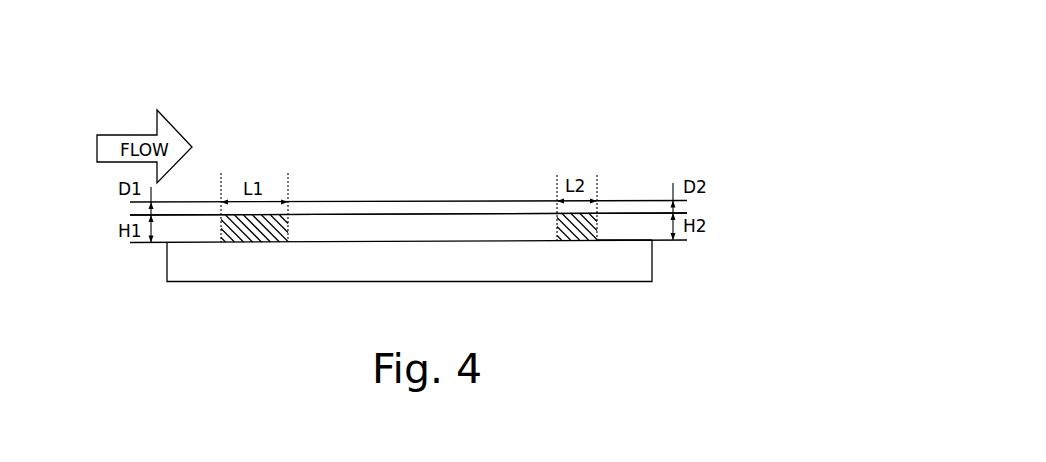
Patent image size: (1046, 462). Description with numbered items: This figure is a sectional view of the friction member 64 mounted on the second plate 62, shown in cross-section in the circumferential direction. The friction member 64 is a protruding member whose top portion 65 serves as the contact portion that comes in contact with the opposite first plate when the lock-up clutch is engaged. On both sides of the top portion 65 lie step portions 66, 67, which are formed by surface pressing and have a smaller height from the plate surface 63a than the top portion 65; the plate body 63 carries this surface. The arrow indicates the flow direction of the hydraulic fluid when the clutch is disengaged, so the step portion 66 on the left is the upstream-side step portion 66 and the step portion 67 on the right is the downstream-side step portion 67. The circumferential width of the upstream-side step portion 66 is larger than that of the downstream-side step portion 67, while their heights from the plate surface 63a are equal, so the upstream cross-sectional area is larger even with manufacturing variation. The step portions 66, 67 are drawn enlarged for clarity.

The second plate 62 is at (619, 120).
The base member 63 is at (668, 268).
The plate surface 63a is at (618, 231).
The friction member 64 is at (468, 190).
The top portion 65 is at (345, 200).
The upstream-side step portion 66 is at (245, 243).
The downstream-side step portion 67 is at (567, 241).